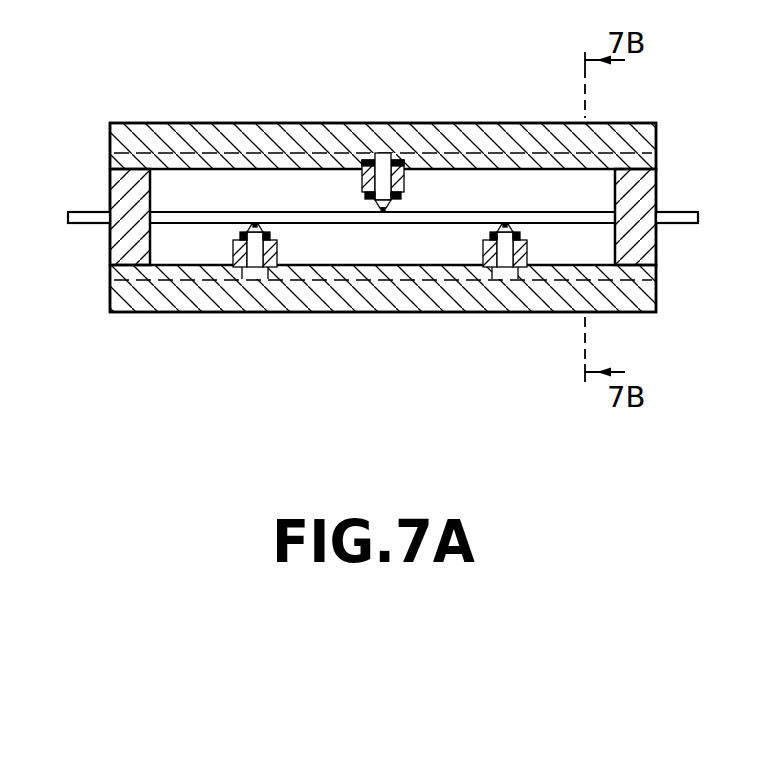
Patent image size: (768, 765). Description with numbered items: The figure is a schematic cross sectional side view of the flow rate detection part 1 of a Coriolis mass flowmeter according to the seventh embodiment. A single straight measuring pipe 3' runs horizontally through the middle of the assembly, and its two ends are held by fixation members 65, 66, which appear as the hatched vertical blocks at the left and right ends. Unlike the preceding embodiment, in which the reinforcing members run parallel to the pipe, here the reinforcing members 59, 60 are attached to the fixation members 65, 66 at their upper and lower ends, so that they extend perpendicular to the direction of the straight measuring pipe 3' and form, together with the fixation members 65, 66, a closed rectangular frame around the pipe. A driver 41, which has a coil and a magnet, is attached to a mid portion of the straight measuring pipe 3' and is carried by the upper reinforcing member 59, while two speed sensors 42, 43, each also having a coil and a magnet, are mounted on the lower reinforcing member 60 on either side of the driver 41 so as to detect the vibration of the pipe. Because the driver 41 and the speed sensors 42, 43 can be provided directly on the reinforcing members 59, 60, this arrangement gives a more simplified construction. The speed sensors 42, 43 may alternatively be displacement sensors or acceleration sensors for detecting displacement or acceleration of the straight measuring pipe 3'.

The flow rate detection part 1 is at (476, 108).
The single straight measuring pipe 3' is at (383, 144).
The driver 41 is at (408, 184).
The speed sensor 42 is at (277, 253).
The speed sensor 43 is at (483, 250).
The reinforcing member 59 is at (607, 150).
The reinforcing member 60 is at (630, 287).
The fixation member 65 is at (120, 250).
The fixation member 66 is at (642, 183).